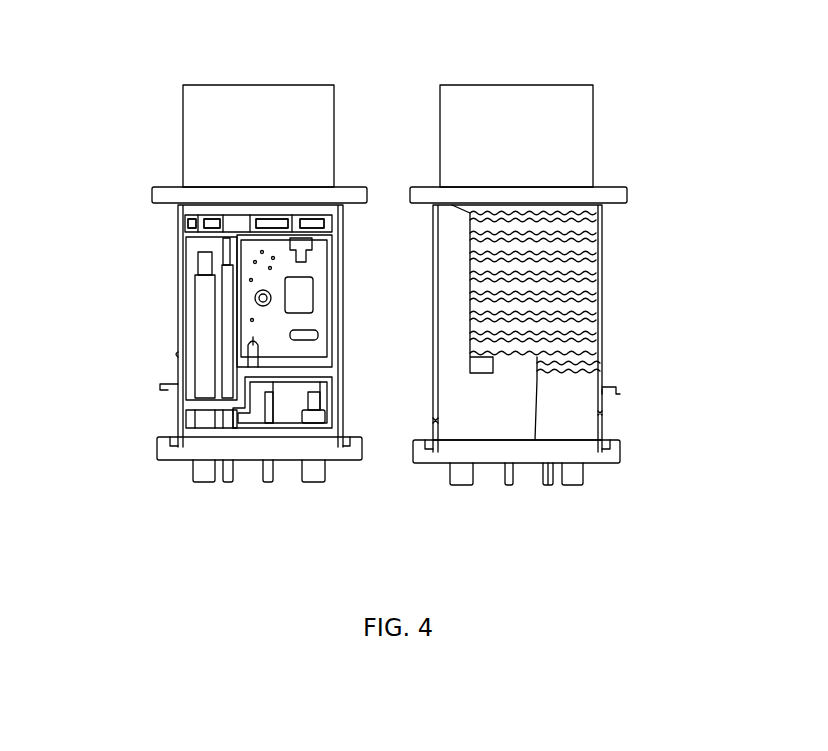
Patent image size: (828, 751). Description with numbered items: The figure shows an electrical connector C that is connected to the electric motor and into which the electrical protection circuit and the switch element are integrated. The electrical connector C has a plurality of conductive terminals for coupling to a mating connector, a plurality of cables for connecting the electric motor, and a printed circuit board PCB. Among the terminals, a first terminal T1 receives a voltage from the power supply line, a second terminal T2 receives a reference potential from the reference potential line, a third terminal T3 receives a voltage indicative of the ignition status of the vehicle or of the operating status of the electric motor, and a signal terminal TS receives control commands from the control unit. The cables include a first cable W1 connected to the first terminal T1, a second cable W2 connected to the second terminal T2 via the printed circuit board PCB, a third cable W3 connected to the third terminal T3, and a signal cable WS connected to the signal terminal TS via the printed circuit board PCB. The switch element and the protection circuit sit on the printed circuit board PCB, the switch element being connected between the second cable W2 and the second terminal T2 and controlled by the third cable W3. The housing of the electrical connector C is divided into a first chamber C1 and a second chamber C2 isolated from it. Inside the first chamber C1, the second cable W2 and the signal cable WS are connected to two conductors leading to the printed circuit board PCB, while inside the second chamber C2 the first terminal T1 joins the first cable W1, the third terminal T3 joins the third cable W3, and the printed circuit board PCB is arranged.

The electrical connector C is at (238, 97).
The first terminal T1 is at (184, 216).
The second terminal T2 is at (309, 224).
The third terminal T3 is at (212, 217).
The signal terminal TS is at (263, 224).
The printed circuit board PCB is at (323, 312).
The first chamber C1 is at (332, 400).
The second chamber C2 is at (191, 338).
The first cable W1 is at (190, 476).
The second cable W2 is at (316, 484).
The third cable W3 is at (230, 483).
The signal cable WS is at (268, 483).